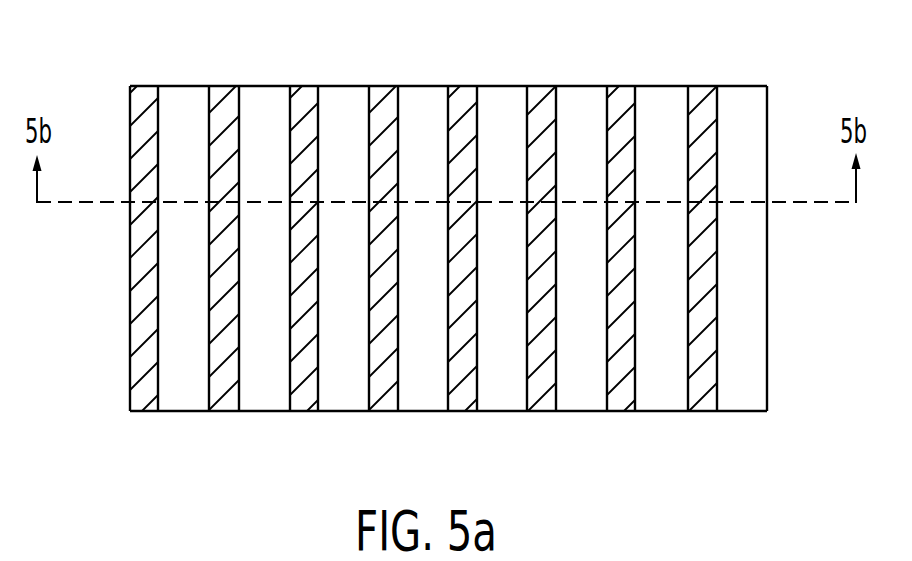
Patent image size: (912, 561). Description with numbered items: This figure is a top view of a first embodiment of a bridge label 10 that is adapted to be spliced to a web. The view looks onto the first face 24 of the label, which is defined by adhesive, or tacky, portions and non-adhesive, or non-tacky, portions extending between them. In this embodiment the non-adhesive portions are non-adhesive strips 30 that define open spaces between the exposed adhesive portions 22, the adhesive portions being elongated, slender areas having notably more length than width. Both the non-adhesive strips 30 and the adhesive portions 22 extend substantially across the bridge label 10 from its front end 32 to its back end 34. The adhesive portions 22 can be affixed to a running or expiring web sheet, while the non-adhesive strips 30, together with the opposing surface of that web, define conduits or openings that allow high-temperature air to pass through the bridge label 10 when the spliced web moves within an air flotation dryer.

The bridge label 10 is at (104, 252).
The adhesive portions 22 is at (703, 163).
The first face 24 is at (265, 104).
The non-adhesive strips 30 is at (580, 103).
The front end 32 is at (580, 413).
The back end 34 is at (436, 88).